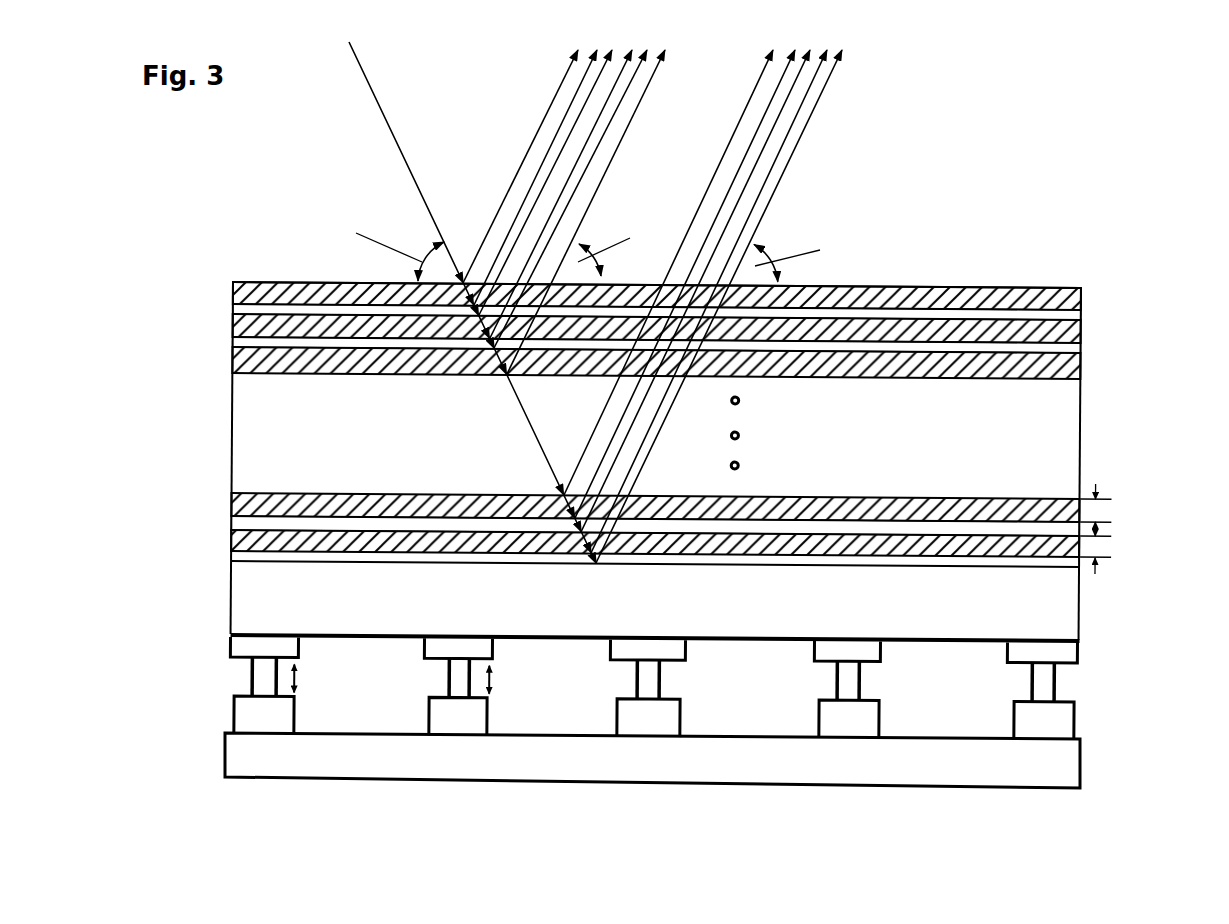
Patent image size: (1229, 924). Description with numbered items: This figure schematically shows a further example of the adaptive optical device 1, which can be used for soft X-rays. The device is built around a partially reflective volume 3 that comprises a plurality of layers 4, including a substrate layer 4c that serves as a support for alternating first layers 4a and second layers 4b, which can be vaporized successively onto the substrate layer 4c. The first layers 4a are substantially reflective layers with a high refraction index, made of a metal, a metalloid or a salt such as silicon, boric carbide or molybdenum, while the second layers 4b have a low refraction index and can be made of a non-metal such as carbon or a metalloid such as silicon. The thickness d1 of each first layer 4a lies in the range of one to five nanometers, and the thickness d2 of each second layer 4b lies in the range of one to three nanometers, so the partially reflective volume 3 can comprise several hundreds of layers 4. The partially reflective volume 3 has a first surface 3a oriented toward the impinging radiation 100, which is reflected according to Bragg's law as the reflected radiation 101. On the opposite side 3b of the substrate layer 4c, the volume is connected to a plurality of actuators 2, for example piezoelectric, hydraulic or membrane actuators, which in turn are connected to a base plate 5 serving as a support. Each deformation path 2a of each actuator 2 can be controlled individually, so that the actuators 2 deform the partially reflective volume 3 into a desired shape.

The adaptive optical device 1 is at (1122, 197).
The actuators 2 is at (665, 718).
The deformation paths 2a is at (415, 679).
The partially reflective volume 3 is at (220, 312).
The first surface 3a is at (1026, 284).
The side of the substrate layer 3b is at (935, 640).
The layers 4 is at (1045, 475).
The first layers 4a is at (975, 290).
The second layers 4b is at (905, 316).
The substrate layer 4c is at (1093, 620).
The base plate 5 is at (656, 762).
The impinging radiation 100 is at (469, 303).
The reflected light beams 101 is at (655, 285).
The thickness of the first layers d1 is at (1117, 510).
The thickness of the second layers d2 is at (1117, 555).